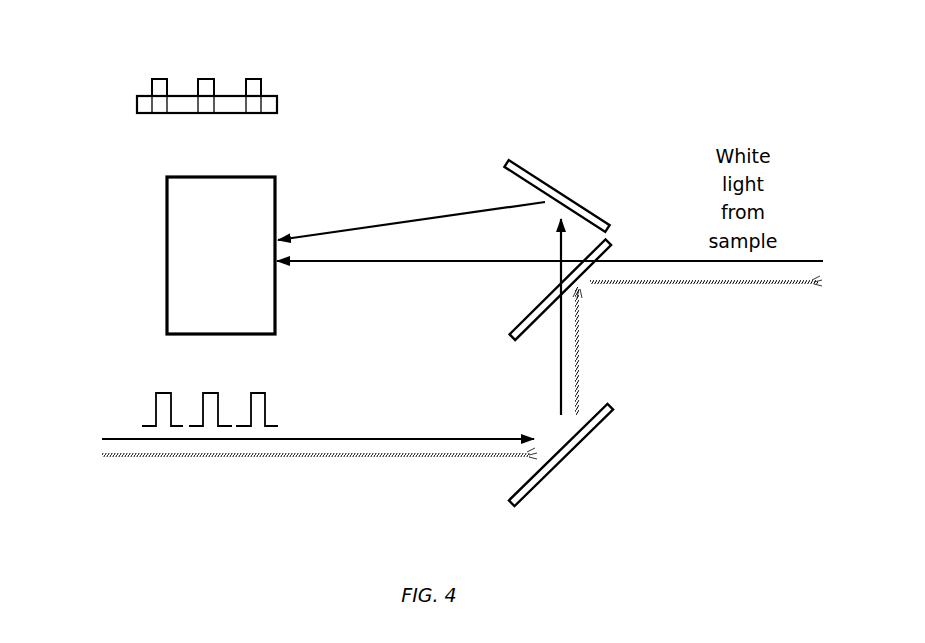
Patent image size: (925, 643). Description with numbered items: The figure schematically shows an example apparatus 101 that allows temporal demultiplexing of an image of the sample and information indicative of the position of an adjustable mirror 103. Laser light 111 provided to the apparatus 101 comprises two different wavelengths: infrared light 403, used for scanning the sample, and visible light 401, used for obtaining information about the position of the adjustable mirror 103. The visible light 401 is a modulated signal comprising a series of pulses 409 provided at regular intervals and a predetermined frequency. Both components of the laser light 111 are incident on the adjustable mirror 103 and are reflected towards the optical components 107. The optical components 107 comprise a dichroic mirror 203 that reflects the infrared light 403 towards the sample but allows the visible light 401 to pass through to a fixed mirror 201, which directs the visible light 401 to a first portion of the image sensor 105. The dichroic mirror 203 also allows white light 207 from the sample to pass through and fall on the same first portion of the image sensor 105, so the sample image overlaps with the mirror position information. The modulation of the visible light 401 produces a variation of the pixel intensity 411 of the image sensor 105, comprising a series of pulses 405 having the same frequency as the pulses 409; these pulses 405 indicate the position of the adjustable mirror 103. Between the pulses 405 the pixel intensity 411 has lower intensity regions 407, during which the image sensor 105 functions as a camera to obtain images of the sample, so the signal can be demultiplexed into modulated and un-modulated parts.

The apparatus 101 is at (394, 66).
The adjustable mirror 103 is at (533, 492).
The image sensor 105 is at (167, 190).
The optical components 107 is at (531, 248).
The laser light 111 is at (281, 428).
The fixed mirror 201 is at (532, 172).
The dichroic mirror 203 is at (527, 316).
The white light 207 is at (813, 259).
The visible light 401 is at (117, 437).
The infrared light 403 is at (120, 460).
The pulses 405 is at (251, 78).
The lower intensity regions 407 is at (232, 114).
The pulses 409 is at (212, 393).
The pixel intensity 411 is at (170, 96).